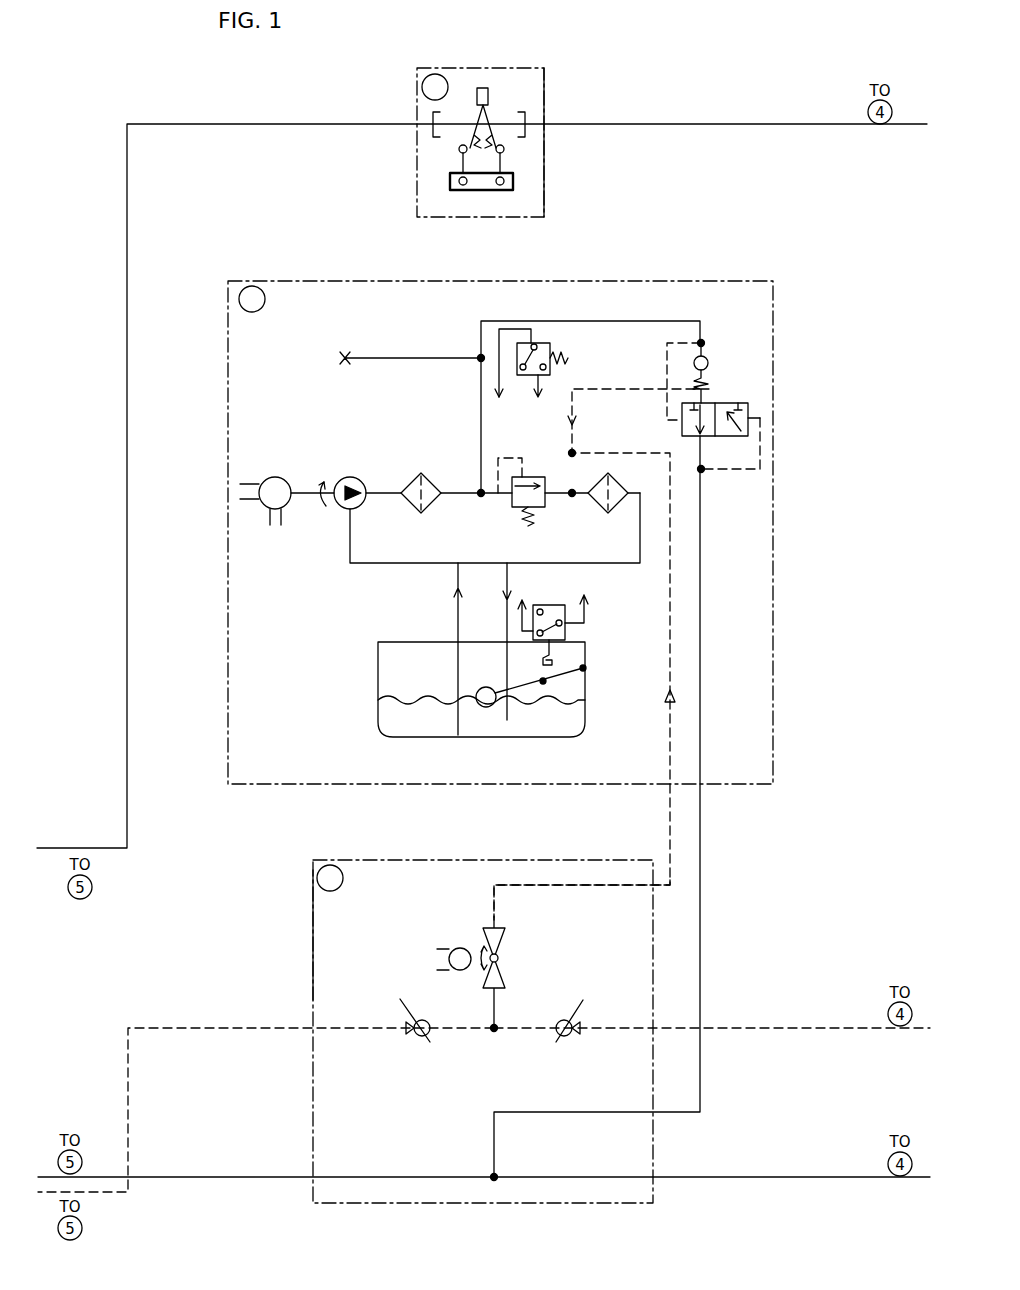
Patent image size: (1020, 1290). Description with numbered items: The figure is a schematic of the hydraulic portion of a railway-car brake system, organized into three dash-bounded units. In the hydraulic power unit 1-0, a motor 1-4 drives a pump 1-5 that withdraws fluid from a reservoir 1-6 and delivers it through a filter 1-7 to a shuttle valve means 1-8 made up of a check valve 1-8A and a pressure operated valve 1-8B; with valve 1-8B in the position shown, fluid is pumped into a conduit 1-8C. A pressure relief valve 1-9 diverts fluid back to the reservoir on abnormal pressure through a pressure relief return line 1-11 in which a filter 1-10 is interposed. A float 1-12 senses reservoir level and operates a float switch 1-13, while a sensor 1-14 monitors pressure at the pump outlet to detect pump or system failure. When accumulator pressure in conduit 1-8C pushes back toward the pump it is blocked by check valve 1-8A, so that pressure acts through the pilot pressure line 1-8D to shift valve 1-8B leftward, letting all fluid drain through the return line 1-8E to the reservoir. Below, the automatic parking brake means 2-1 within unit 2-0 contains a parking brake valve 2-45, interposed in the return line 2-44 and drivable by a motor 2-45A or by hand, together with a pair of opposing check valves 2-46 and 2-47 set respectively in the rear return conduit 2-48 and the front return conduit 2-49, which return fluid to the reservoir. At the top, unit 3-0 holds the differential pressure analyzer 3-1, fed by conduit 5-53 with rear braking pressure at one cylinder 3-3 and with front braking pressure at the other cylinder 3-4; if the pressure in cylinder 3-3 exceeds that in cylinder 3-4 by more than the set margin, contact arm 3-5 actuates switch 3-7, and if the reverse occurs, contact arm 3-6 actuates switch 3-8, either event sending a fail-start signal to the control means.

The thermostat unit 3-0 is at (414, 84).
The differential pressure analyzer 3-1 is at (548, 91).
The cylinder 3-3 is at (440, 118).
The cylinder 3-4 is at (518, 118).
The contact arm 3-5 is at (460, 153).
The contact arm 3-6 is at (503, 153).
The switch 3-7 is at (463, 190).
The switch 3-8 is at (500, 190).
The hydraulic power unit 1-0 is at (323, 273).
The motor 1-4 is at (280, 477).
The pump 1-5 is at (355, 477).
The reservoir 1-6 is at (430, 642).
The filter 1-7 is at (428, 474).
The shuttle valve means 1-8 is at (733, 392).
The check valve 1-8A is at (708, 368).
The pressure operated valve 1-8B is at (748, 406).
The conduit 1-8C is at (701, 640).
The pilot pressure line 1-8D is at (740, 471).
The return line 1-8E is at (632, 388).
The pressure relief valve 1-9 is at (540, 477).
The filter 1-10 is at (596, 509).
The pressure relief return line 1-11 is at (585, 565).
The float 1-12 is at (488, 708).
The float switch 1-13 is at (580, 633).
The sensor 1-14 is at (537, 345).
The conduit 5-53 is at (127, 622).
The control unit 2-0 is at (355, 860).
The automatic parking brake means 2-1 is at (305, 943).
The return line 2-44 is at (615, 886).
The parking brake valve 2-45 is at (485, 938).
The motor 2-45A is at (447, 960).
The check valve 2-46 is at (390, 1013).
The check valve 2-47 is at (591, 1013).
The return conduit 2-48 is at (222, 1027).
The return conduit 2-49 is at (722, 1027).